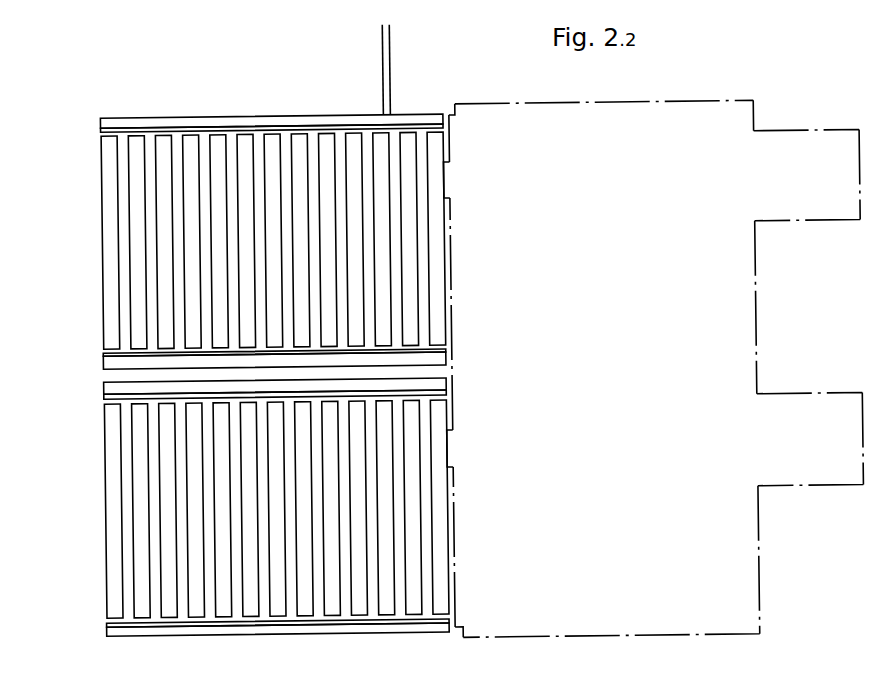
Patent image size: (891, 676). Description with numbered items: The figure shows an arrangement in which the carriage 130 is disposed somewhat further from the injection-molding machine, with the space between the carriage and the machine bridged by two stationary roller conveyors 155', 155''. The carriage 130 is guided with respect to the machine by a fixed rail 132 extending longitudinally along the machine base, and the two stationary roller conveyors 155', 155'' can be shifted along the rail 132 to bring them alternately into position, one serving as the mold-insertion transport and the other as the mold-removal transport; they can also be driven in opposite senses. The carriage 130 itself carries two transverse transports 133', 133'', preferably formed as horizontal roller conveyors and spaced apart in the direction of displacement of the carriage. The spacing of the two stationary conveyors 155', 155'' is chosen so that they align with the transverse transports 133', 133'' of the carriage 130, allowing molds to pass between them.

The carriage 130 is at (653, 352).
The fixed rail 132 is at (394, 72).
The transverse transport 133' is at (652, 248).
The transverse transport 133'' is at (655, 514).
The stationary roller conveyor 155' is at (246, 242).
The stationary roller conveyor 155'' is at (248, 507).